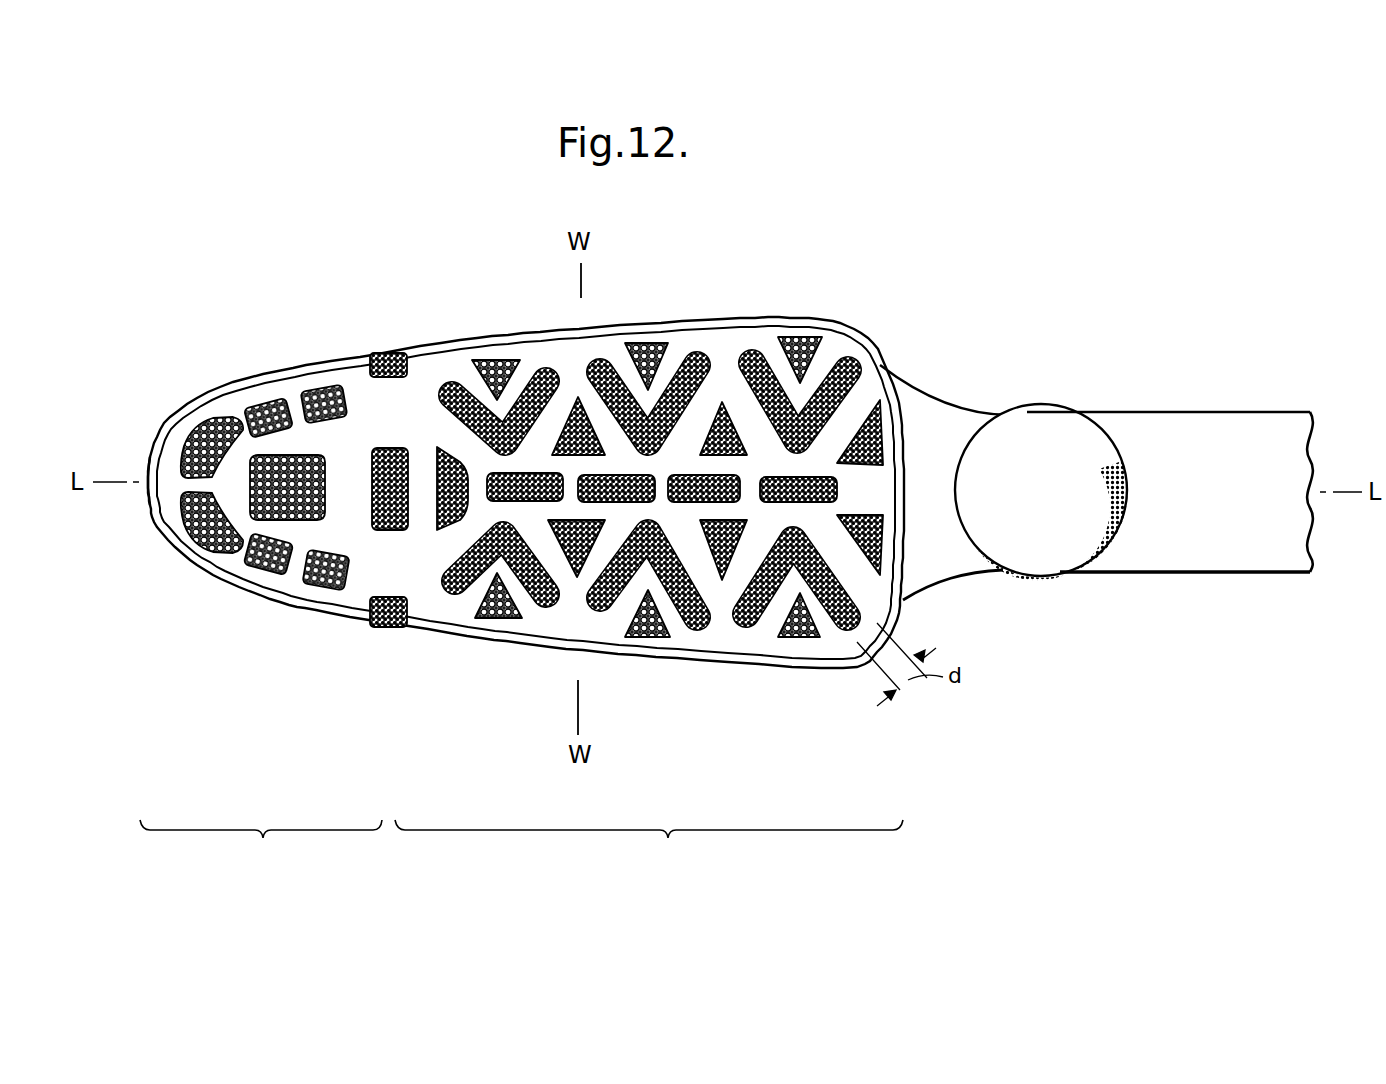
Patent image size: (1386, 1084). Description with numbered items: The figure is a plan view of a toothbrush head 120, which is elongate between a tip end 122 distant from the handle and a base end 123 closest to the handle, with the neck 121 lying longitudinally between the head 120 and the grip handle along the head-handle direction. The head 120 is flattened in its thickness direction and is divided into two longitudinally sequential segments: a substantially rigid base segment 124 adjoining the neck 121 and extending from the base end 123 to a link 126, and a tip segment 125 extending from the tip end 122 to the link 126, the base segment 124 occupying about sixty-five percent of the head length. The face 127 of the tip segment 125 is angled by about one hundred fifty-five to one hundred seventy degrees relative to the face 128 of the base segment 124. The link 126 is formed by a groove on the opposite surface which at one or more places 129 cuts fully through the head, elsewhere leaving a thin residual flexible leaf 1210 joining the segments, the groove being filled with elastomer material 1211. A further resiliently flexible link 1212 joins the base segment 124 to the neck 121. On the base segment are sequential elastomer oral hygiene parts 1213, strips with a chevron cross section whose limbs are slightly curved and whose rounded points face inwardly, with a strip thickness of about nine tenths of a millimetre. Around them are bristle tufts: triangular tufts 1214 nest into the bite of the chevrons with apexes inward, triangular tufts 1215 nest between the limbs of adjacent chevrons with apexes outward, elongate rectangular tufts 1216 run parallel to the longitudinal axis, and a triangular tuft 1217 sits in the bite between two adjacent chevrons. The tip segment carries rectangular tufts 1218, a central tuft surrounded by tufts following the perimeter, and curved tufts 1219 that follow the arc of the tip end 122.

The toothbrush head 120 is at (688, 224).
The neck 121 is at (1210, 410).
The tip end 122 is at (149, 505).
The base end 123 is at (895, 638).
The base segment 124 is at (649, 850).
The tip segment 125 is at (261, 849).
The link 126 is at (387, 634).
The face of the tip segment 127 is at (236, 570).
The face of the base segment 128 is at (722, 640).
The place where groove cuts through 129 is at (380, 450).
The residual flexible leaf 1210 is at (385, 565).
The elastomer material 1211 is at (390, 355).
The resiliently flexible link 1212 is at (1065, 575).
The elastomer oral hygiene parts 1213 is at (858, 358).
The bristle tufts 1214 is at (797, 345).
The bristle tufts 1215 is at (719, 398).
The bristle tufts 1216 is at (492, 485).
The bristle tuft 1217 is at (437, 535).
The bristle tufts 1218 is at (253, 408).
The bristle tufts 1219 is at (192, 447).